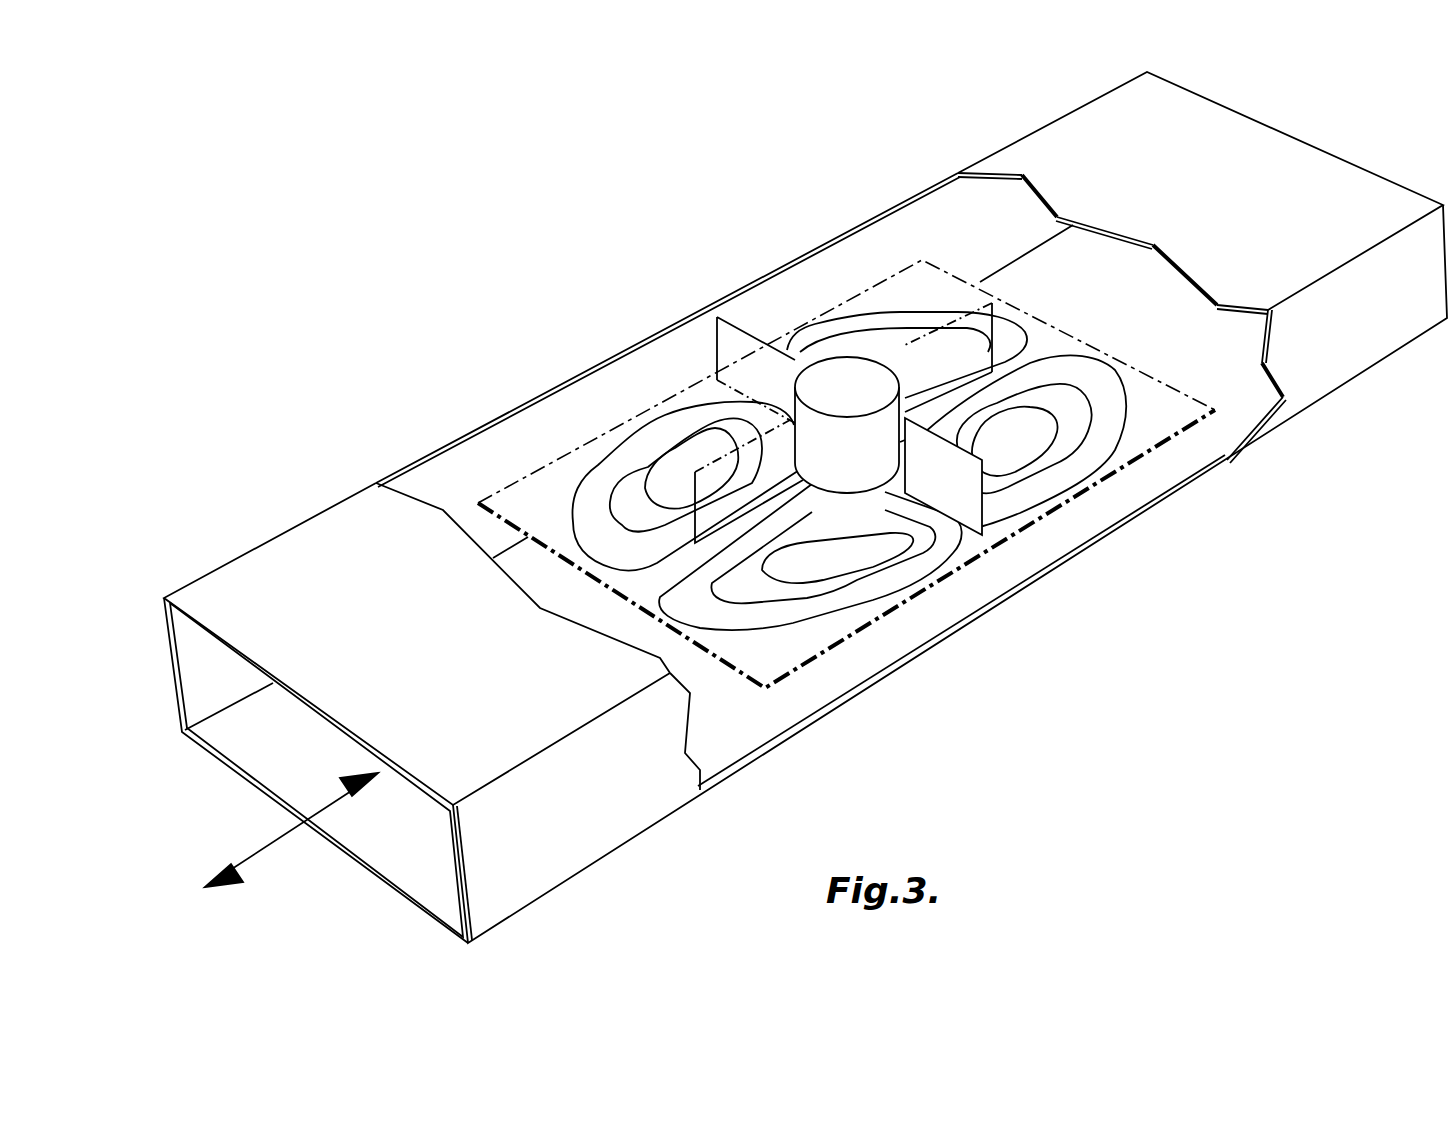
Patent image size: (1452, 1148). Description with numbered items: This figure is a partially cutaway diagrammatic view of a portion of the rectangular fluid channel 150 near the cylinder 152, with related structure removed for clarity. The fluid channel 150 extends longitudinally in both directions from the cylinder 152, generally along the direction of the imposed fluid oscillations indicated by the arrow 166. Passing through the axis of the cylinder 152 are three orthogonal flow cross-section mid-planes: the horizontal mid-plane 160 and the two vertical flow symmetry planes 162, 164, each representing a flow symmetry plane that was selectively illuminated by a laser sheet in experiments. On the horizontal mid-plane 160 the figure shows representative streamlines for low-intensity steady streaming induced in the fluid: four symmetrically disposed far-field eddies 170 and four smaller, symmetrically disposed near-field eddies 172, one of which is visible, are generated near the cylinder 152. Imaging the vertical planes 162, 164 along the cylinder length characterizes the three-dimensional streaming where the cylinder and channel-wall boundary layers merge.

The fluid channel 150 is at (963, 147).
The cylinder 152 is at (847, 387).
The horizontal mid-plane 160 is at (1183, 430).
The vertical flow symmetry plane 162 is at (967, 495).
The vertical flow symmetry plane 164 is at (712, 458).
The arrow 166 is at (285, 835).
The far-field eddies 170 is at (897, 312).
The near-field eddies 172 is at (845, 503).